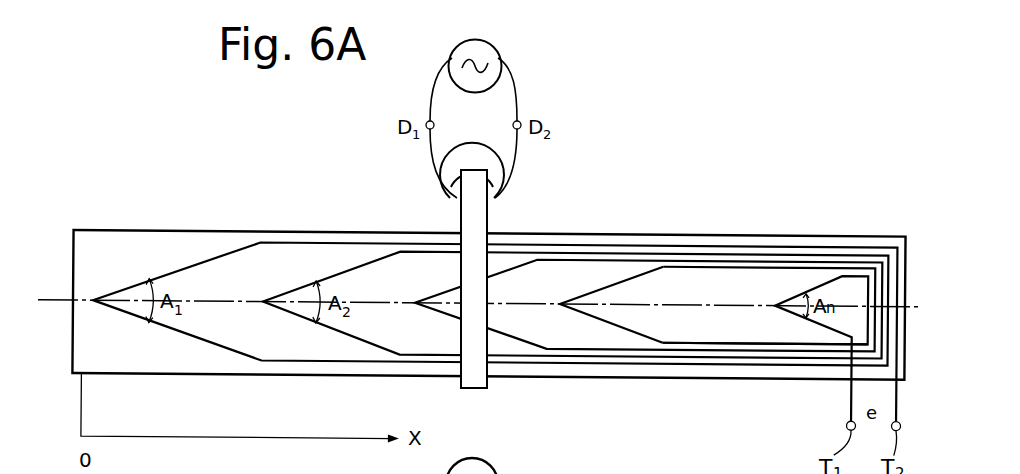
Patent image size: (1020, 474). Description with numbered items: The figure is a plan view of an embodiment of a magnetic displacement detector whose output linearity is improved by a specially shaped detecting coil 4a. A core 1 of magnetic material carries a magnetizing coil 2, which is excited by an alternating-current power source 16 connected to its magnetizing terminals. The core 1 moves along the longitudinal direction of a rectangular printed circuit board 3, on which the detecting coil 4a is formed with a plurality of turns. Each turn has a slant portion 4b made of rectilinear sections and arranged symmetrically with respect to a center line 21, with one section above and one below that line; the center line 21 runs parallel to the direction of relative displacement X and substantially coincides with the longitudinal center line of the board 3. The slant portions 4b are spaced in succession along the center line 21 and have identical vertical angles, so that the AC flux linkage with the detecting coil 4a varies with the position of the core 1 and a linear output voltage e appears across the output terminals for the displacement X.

The core 1 is at (489, 217).
The magnetizing coil 2 is at (503, 168).
The printed circuit board 3 is at (755, 235).
The detecting coil 4a is at (716, 345).
The slant portion 4b is at (605, 288).
The alternating-current power source 16 is at (498, 52).
The center line 21 is at (50, 300).